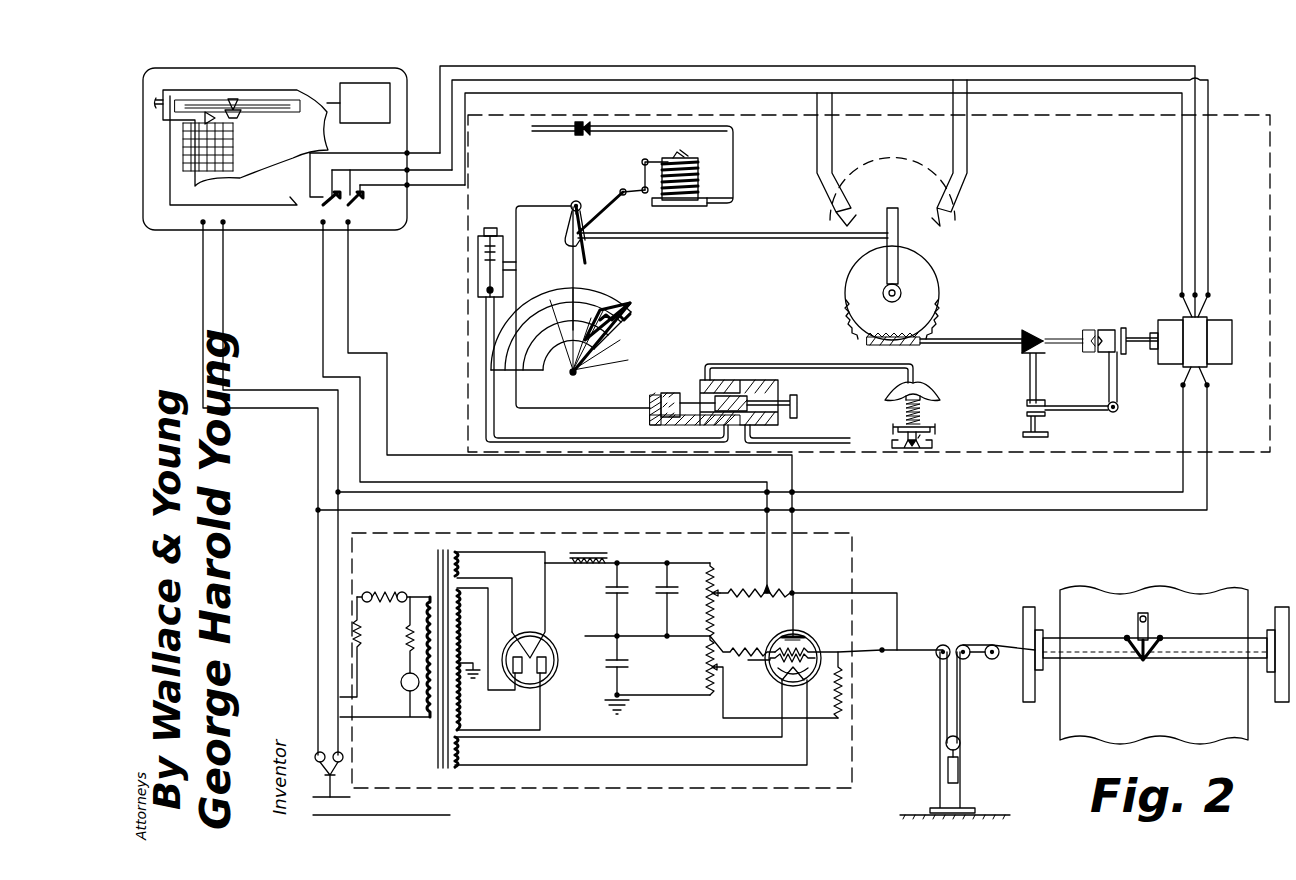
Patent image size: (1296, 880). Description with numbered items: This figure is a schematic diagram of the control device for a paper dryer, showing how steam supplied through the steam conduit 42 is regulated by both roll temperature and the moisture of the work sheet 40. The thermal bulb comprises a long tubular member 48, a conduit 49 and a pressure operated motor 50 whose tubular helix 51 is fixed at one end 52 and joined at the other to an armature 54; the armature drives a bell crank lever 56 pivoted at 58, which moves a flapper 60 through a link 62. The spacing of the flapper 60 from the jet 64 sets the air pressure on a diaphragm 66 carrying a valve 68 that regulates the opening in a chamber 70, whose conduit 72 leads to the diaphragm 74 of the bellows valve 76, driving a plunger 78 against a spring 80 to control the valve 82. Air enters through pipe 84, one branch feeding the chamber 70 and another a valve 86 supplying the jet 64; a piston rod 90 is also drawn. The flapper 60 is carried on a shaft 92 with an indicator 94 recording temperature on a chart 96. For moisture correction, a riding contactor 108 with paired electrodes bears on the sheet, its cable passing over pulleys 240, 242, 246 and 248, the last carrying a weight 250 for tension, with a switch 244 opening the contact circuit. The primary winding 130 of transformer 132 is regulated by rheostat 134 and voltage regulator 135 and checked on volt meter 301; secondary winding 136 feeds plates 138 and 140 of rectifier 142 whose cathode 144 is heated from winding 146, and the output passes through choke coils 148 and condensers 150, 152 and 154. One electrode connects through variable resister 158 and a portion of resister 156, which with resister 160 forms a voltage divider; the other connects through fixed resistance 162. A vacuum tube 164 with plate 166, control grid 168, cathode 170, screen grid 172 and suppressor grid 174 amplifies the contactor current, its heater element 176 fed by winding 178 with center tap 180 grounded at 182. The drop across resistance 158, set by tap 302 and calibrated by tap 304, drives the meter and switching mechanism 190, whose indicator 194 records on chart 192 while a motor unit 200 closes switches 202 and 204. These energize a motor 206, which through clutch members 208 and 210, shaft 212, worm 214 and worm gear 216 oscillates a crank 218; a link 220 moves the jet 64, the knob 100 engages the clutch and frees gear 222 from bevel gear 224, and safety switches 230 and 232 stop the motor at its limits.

The work sheet 40 is at (1080, 715).
The steam conduit 42 is at (936, 440).
The tubular member 48 is at (545, 130).
The conduit 49 is at (630, 127).
The pressure operated motor 50 is at (673, 167).
The helix 51 is at (692, 165).
The fixed end 52 is at (690, 205).
The armature 54 is at (680, 148).
The bell crank lever 56 is at (642, 171).
The pivot 58 is at (642, 195).
The flapper 60 is at (588, 254).
The link 62 is at (600, 210).
The jet 64 is at (568, 236).
The diaphragm 66 is at (674, 398).
The valve 68 is at (720, 425).
The chamber 70 is at (720, 383).
The conduit 72 is at (740, 365).
The diaphragm 74 is at (930, 402).
The bellows valve 76 is at (928, 386).
The plunger 78 is at (905, 412).
The spring 80 is at (925, 420).
The valve 82 is at (912, 448).
The pipe 84 is at (800, 440).
The valve 86 is at (482, 270).
The piston rod 90 is at (760, 382).
The shaft 92 is at (573, 296).
The indicator 94 is at (605, 350).
The chart 96 is at (600, 310).
The control knob 100 is at (1045, 424).
The riding contactor 108 is at (1148, 620).
The primary winding 130 is at (430, 716).
The transformer 132 is at (426, 645).
The rheostat 134 is at (358, 633).
The voltage regulator 135 is at (384, 592).
The secondary winding 136 is at (460, 609).
The plate 138 is at (519, 673).
The plate 140 is at (544, 673).
The rectifier 142 is at (548, 645).
The cathode 144 is at (528, 640).
The secondary winding 146 is at (460, 552).
The choke coil 148 is at (592, 547).
The condenser 150 is at (622, 595).
The condenser 152 is at (672, 595).
The condenser 154 is at (630, 660).
The resister 156 is at (714, 583).
The variable resister 158 is at (750, 596).
The resister 160 is at (708, 672).
The fixed resistance 162 is at (830, 688).
The thermionic vacuum tube 164 is at (748, 648).
The plate 166 is at (798, 632).
The control grid 168 is at (812, 650).
The cathode 170 is at (770, 661).
The screen grid 172 is at (806, 638).
The suppressor grid 174 is at (812, 685).
The heater element 176 is at (790, 690).
The secondary winding 178 is at (460, 759).
The center tap 180 is at (462, 757).
The ground 182 is at (628, 703).
The meter and switching mechanism 190 is at (276, 63).
The chart 192 is at (185, 148).
The indicator 194 is at (185, 125).
The motor unit 200 is at (370, 84).
The switch 202 is at (320, 210).
The switch 204 is at (350, 210).
The motor 206 is at (1205, 320).
The clutch member 208 is at (1106, 328).
The clutch member 210 is at (1087, 328).
The shaft 212 is at (950, 338).
The worm 214 is at (900, 348).
The worm gear 216 is at (925, 283).
The crank 218 is at (898, 210).
The link 220 is at (740, 232).
The gear 222 is at (1032, 355).
The bevel gear 224 is at (1022, 344).
The safety switch 230 is at (818, 197).
The safety switch 232 is at (960, 200).
The pulley 240 is at (992, 659).
The pulley 242 is at (965, 645).
The switch 244 is at (873, 648).
The pulley 246 is at (943, 645).
The pulley 248 is at (960, 745).
The weight 250 is at (958, 768).
The volt meter 301 is at (402, 688).
The tap 302 is at (773, 590).
The tap 304 is at (722, 593).